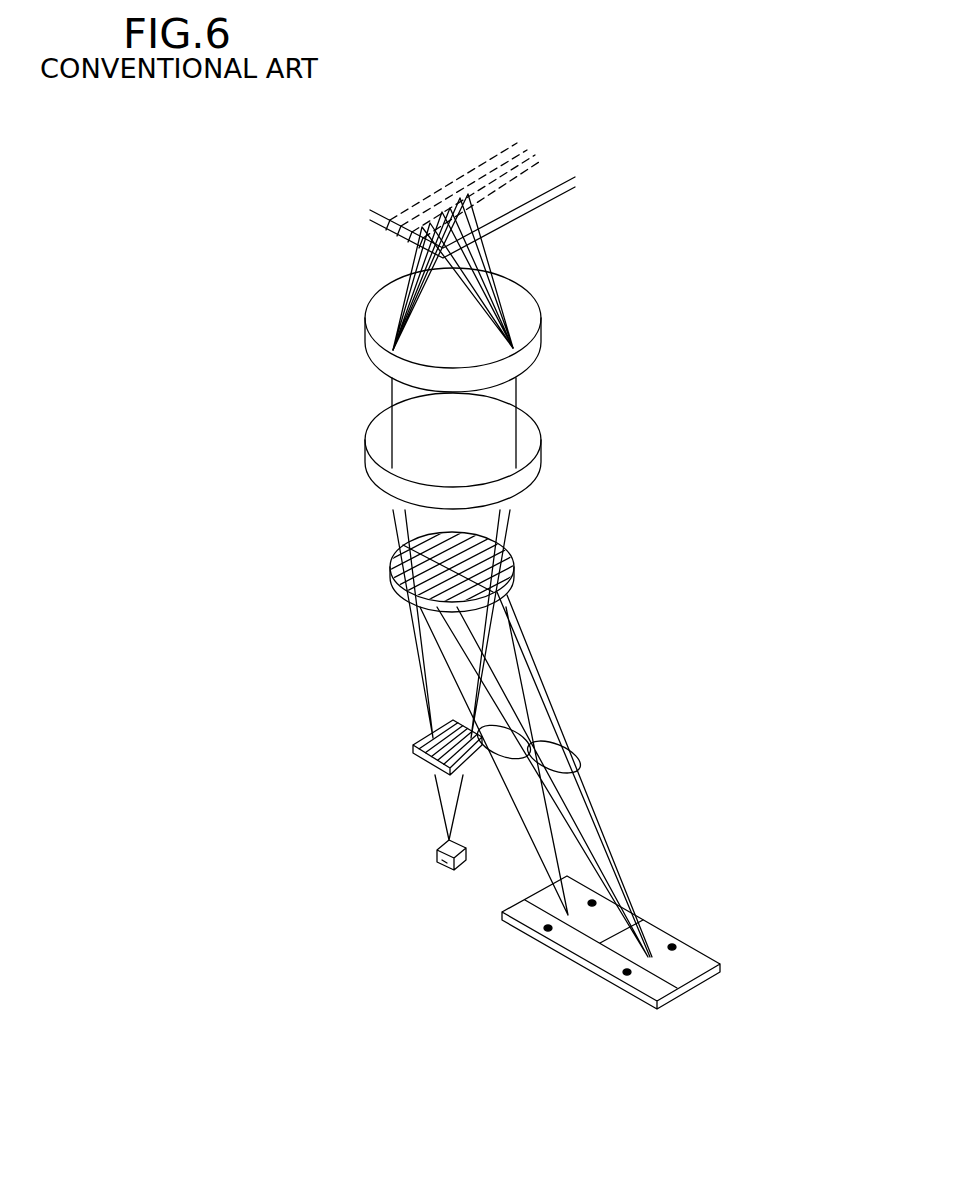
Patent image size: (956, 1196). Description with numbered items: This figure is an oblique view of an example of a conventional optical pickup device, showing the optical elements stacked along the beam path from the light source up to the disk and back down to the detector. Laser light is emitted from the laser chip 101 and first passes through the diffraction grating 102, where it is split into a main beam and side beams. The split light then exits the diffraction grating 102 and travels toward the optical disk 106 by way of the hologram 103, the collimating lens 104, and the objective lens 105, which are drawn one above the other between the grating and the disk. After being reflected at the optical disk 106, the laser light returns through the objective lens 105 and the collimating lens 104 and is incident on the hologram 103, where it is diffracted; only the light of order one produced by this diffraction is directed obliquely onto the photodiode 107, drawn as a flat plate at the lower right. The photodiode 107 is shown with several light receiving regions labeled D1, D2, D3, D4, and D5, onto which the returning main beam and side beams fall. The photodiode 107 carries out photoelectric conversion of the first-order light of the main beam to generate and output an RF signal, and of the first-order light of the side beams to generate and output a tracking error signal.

The laser chip 101 is at (437, 851).
The diffraction grating 102 is at (413, 758).
The hologram 103 is at (392, 570).
The collimating lens 104 is at (368, 468).
The objective lens 105 is at (368, 338).
The optical disk 106 is at (532, 212).
The photodiode 107 is at (697, 983).
The light receiving region D1 is at (567, 959).
The light receiving region D2 is at (622, 982).
The light receiving region D3 is at (679, 952).
The light receiving region D4 is at (542, 916).
The light receiving region D5 is at (656, 919).